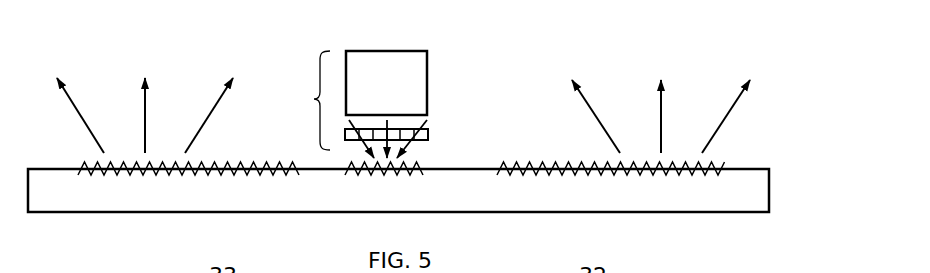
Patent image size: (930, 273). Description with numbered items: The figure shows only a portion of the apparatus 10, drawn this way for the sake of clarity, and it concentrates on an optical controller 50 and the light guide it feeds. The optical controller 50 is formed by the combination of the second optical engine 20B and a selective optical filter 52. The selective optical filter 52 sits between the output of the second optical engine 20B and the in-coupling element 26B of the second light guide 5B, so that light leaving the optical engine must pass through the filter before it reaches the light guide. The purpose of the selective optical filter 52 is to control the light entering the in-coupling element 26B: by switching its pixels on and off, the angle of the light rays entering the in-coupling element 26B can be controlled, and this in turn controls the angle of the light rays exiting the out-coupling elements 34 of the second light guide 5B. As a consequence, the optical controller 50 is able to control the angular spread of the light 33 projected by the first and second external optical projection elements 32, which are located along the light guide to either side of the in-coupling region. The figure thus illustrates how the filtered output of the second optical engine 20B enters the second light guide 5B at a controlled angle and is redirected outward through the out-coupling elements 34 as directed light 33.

The apparatus 10 is at (772, 80).
The second light guide 5B is at (769, 190).
The second optical engine 20B is at (370, 51).
The in-coupling element 26B is at (430, 165).
The first and second external optical projection elements 32 is at (226, 151).
The light 33 is at (120, 75).
The out-coupling elements 34 is at (80, 166).
The optical controller 50 is at (314, 99).
The selective optical filter 52 is at (428, 133).